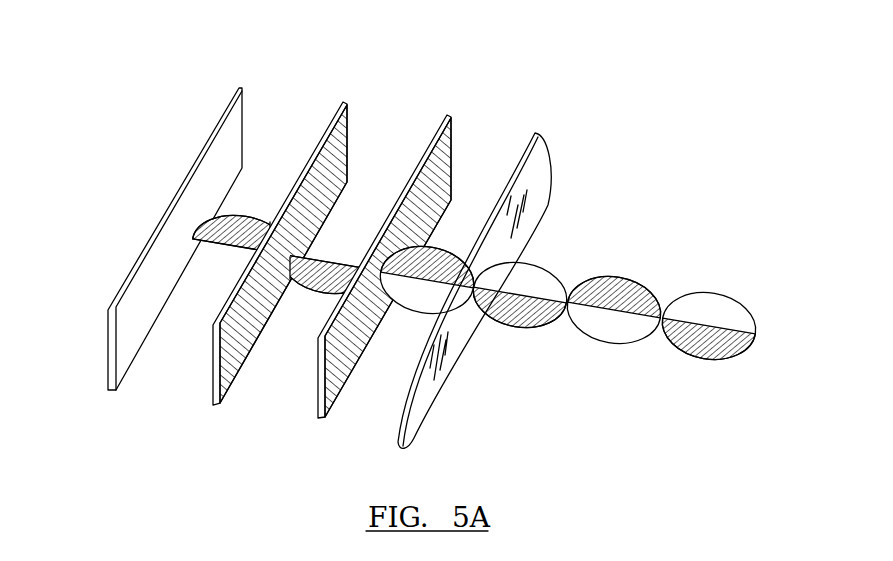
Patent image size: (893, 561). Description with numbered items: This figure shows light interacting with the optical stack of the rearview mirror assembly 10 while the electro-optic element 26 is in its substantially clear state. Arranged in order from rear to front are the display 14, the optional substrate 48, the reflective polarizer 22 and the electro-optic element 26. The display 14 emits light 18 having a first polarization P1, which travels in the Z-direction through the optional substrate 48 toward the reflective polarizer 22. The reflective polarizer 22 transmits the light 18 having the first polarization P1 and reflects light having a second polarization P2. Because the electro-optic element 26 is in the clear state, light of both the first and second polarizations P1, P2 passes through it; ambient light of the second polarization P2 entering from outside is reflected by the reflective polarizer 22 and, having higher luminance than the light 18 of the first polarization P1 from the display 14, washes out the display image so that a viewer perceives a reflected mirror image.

The rearview mirror assembly 10 is at (422, 263).
The display 14 is at (232, 122).
The light 18 is at (225, 262).
The optional substrate 48 is at (338, 140).
The reflective polarizer 22 is at (445, 148).
The electro-optic element 26 is at (537, 160).
The first polarization P1 is at (238, 226).
The second polarization P2 is at (412, 300).